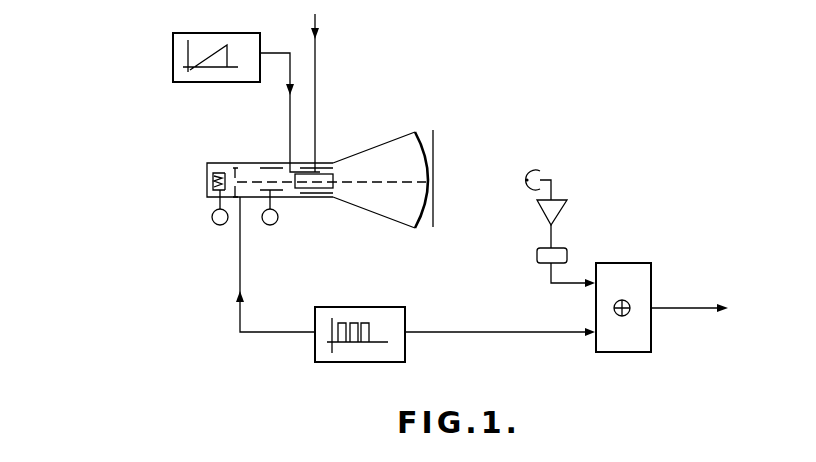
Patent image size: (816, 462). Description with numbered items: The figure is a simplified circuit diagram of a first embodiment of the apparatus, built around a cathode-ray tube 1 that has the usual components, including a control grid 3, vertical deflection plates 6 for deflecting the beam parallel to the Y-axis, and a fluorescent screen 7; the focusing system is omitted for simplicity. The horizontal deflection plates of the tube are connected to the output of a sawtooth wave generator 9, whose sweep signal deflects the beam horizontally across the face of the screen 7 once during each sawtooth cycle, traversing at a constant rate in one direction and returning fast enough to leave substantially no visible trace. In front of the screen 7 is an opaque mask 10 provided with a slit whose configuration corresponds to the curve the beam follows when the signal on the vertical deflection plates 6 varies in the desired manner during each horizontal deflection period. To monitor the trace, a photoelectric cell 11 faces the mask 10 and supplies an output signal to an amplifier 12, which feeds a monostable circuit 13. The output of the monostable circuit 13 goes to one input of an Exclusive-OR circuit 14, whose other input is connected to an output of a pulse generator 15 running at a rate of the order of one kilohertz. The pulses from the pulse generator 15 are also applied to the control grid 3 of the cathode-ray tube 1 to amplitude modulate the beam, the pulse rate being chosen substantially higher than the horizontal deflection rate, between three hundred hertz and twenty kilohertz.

The cathode-ray tube 1 is at (203, 160).
The control grid 3 is at (238, 170).
The vertical deflection plates 6 is at (322, 172).
The fluorescent screen 7 is at (417, 130).
The sawtooth wave generator 9 is at (213, 76).
The opaque mask 10 is at (433, 152).
The photoelectric cell 11 is at (538, 170).
The amplifier 12 is at (560, 210).
The monostable circuit 13 is at (537, 258).
The Exclusive-OR circuit 14 is at (641, 283).
The pulse generator 15 is at (404, 294).